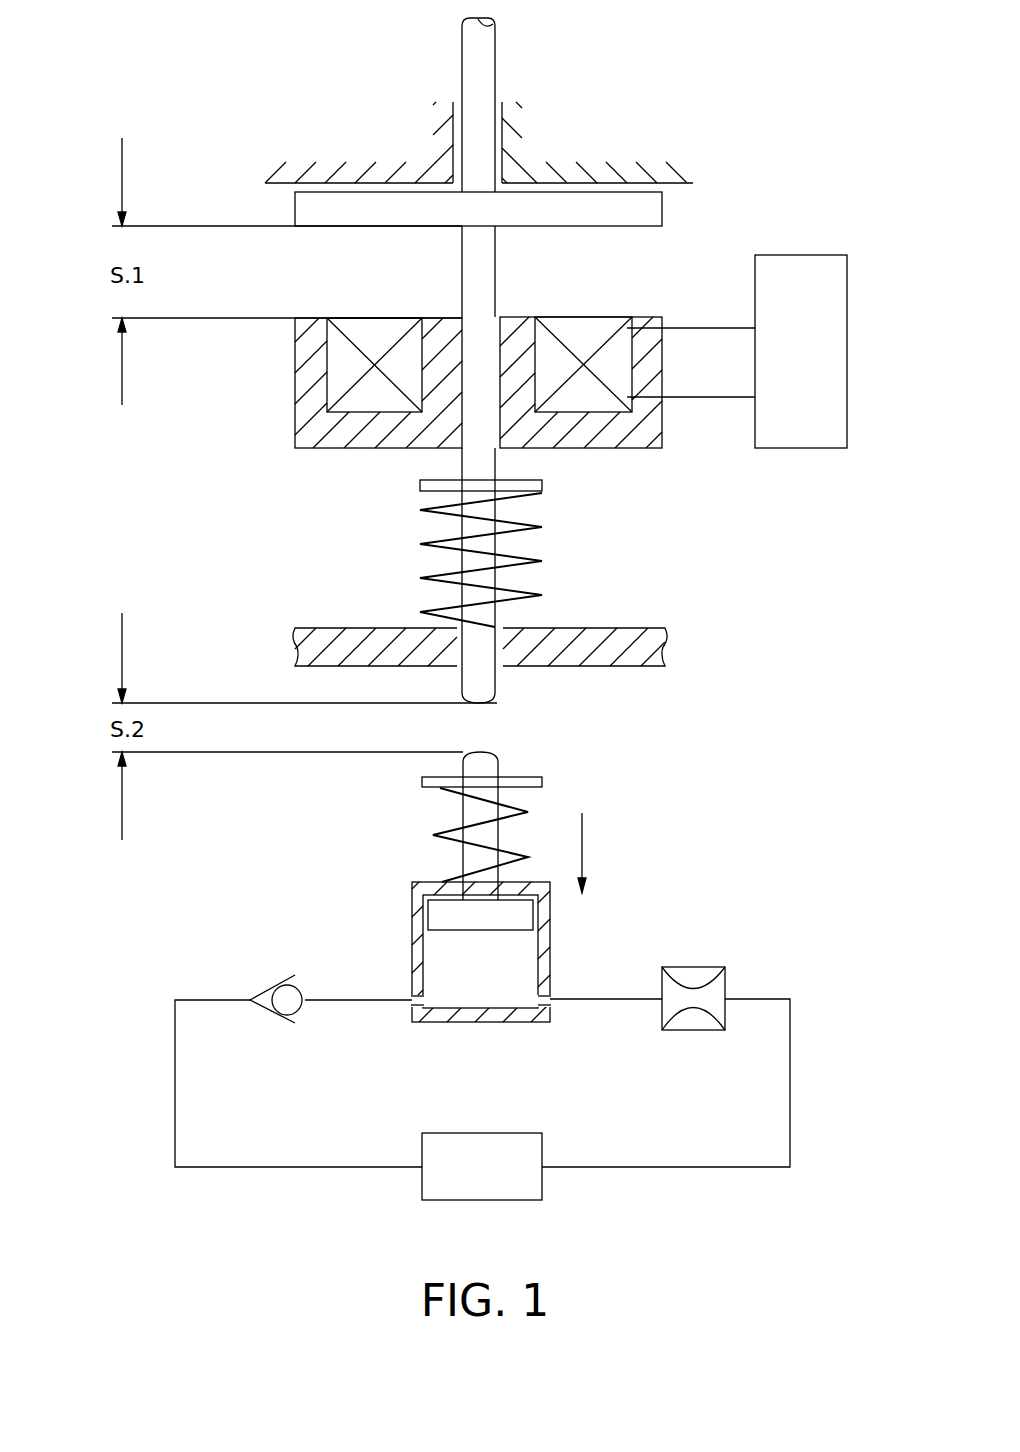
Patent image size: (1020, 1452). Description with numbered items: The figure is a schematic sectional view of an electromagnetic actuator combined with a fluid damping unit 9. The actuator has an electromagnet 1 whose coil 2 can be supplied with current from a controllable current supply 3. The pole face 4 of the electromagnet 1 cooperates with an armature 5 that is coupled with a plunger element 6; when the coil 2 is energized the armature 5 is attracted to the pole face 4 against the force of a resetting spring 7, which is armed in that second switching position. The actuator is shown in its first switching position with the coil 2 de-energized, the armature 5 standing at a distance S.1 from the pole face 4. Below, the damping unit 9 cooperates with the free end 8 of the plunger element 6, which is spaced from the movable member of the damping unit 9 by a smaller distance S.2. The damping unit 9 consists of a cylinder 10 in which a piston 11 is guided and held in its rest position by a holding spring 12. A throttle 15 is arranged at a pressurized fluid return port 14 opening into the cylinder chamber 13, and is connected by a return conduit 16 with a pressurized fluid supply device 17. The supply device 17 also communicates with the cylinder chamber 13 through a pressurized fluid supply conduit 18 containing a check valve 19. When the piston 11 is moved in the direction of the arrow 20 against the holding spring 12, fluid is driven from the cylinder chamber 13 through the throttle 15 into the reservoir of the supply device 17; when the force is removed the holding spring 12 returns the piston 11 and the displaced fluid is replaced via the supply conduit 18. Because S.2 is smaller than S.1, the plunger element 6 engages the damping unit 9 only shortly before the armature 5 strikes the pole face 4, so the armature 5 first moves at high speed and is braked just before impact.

The electromagnet 1 is at (262, 456).
The coil 2 is at (348, 358).
The controllable current supply 3 is at (773, 273).
The pole face 4 is at (642, 316).
The armature 5 is at (643, 197).
The plunger element 6 is at (487, 52).
The resetting spring 7 is at (533, 558).
The free end 8 is at (482, 675).
The fluid damping unit 9 is at (350, 893).
The cylinder 10 is at (547, 963).
The piston 11 is at (517, 913).
The holding spring 12 is at (523, 805).
The cylinder chamber 13 is at (440, 967).
The pressurized fluid return port 14 is at (548, 1008).
The throttle 15 is at (693, 1020).
The return conduit 16 is at (748, 995).
The pressurized fluid supply device 17 is at (488, 1177).
The pressurized fluid supply conduit 18 is at (175, 1108).
The check valve 19 is at (280, 983).
The arrow 20 is at (585, 830).